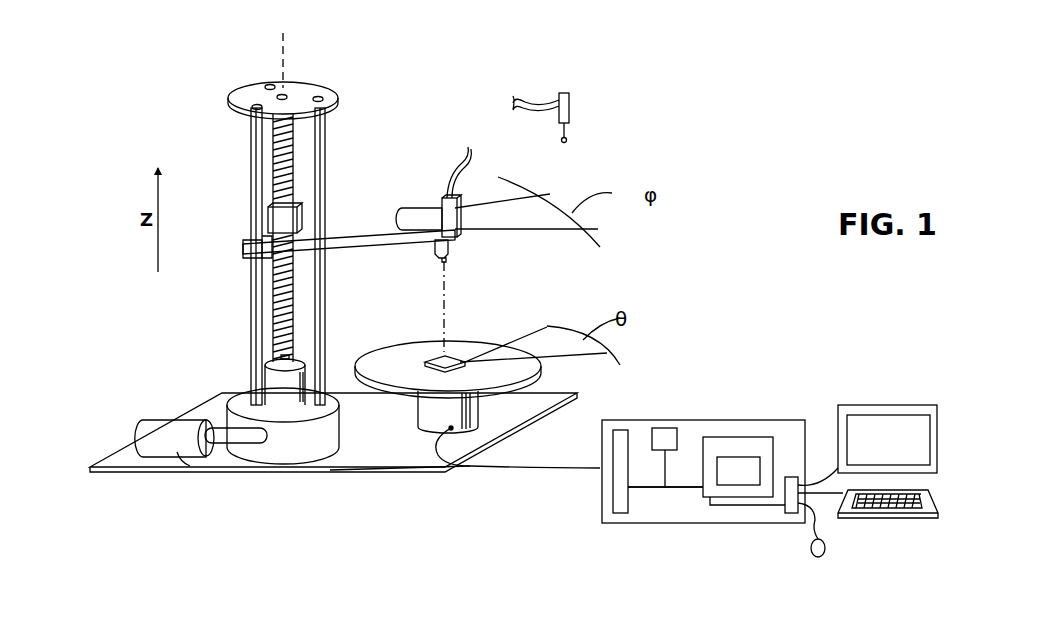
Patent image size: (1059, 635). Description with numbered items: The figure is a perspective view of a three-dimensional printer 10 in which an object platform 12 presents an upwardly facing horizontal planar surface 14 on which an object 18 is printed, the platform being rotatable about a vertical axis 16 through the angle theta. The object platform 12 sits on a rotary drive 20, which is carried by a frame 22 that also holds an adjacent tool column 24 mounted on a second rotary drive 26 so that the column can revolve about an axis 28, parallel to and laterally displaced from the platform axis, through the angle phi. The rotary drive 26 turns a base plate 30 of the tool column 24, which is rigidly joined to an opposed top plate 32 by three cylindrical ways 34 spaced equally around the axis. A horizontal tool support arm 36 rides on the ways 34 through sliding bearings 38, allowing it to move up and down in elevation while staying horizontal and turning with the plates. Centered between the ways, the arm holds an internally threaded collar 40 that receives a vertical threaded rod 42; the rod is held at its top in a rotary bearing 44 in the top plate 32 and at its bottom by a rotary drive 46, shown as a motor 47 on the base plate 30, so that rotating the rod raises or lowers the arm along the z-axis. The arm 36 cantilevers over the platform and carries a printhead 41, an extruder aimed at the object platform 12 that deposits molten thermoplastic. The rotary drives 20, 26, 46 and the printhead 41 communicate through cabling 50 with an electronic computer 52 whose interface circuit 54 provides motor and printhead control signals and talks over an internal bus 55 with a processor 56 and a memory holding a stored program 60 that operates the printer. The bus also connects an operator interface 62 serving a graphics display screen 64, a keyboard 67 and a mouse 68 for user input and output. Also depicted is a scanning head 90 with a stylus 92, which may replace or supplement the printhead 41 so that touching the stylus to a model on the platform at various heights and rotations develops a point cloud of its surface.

The 3-D printer 10 is at (126, 92).
The object platform 12 is at (484, 345).
The horizontal planar surface 14 is at (390, 356).
The vertical axis 16 is at (440, 300).
The object 18 is at (440, 355).
The rotary drive 20 is at (518, 414).
The frame 22 is at (440, 462).
The tool column 24 is at (182, 94).
The rotary drive 26 is at (226, 396).
The axis 28 is at (285, 52).
The base plate 30 is at (238, 400).
The top plate 32 is at (248, 107).
The cylindrical ways 34 is at (266, 216).
The tool support arm 36 is at (355, 230).
The sliding bearings 38 is at (246, 246).
The internally threaded collar 40 is at (264, 248).
The printhead 41 is at (452, 247).
The threaded rod 42 is at (300, 150).
The rotary bearing 44 is at (287, 96).
The rotary drive 46 is at (262, 380).
The motor 47 is at (318, 368).
The cabling 50 is at (370, 468).
The electronic computer 52 is at (706, 420).
The interface circuit 54 is at (620, 512).
The internal bus 55 is at (640, 490).
The processor 56 is at (660, 435).
The stored program 60 is at (742, 475).
The operator interface 62 is at (795, 512).
The graphics display screen 64 is at (908, 405).
The keyboard 67 is at (915, 518).
The mouse 68 is at (825, 552).
The scanning head 90 is at (570, 105).
The stylus 92 is at (568, 140).